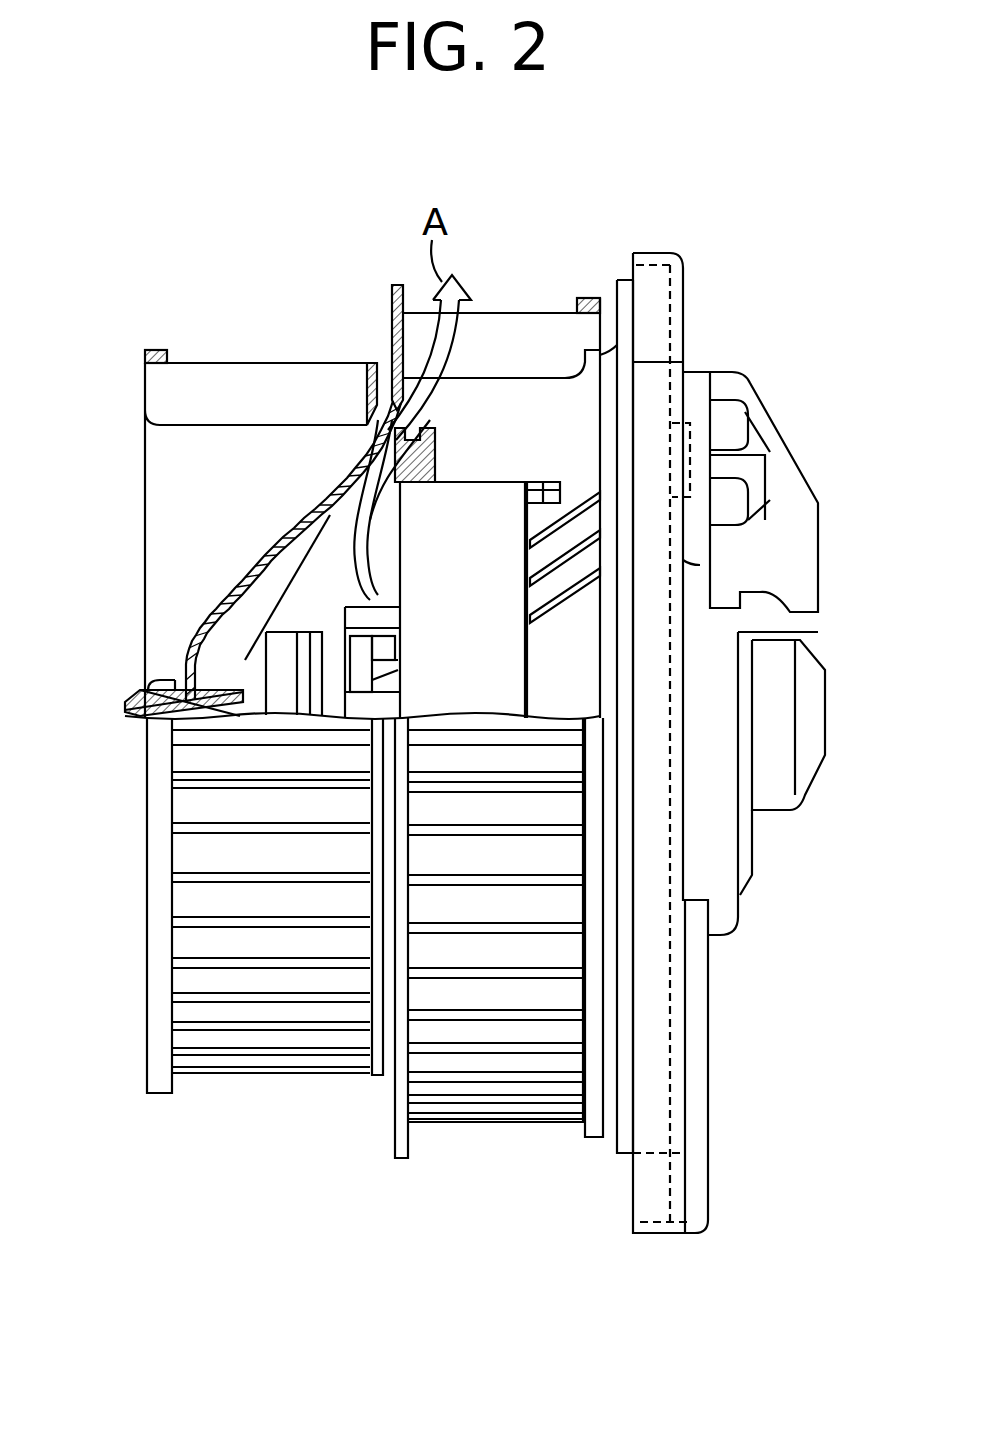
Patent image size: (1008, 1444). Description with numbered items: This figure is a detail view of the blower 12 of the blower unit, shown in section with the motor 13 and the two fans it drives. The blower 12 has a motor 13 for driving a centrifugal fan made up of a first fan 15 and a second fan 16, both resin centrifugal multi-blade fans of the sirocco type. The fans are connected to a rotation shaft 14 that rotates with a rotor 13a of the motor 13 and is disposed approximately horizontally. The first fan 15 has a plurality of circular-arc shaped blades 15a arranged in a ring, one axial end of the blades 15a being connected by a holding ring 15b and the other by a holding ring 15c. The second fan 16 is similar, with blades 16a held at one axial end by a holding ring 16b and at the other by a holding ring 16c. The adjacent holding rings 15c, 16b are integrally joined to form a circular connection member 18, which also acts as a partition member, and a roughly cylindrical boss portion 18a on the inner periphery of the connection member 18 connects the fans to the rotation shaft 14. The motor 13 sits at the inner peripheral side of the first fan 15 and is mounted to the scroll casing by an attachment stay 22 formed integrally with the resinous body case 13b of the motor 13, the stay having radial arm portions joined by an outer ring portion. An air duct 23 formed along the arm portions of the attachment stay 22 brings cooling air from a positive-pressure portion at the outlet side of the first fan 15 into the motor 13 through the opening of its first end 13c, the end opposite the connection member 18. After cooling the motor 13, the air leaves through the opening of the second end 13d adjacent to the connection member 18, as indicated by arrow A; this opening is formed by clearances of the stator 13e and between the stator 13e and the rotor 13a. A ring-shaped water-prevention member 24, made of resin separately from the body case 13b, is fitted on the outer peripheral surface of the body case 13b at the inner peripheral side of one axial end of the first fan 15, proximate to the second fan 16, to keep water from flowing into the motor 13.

The blower 12 is at (752, 955).
The motor 13 is at (798, 780).
The rotor 13a is at (204, 633).
The body case 13b is at (563, 508).
The first end 13c is at (755, 865).
The second end 13d is at (305, 530).
The stator 13e is at (315, 578).
The rotation shaft 14 is at (128, 706).
The first fan 15 is at (501, 1145).
The blades 15a is at (527, 340).
The holding ring 15b is at (596, 1140).
The holding ring 15c is at (402, 1162).
The second fan 16 is at (268, 1095).
The blades 16a is at (263, 380).
The holding ring 16b is at (378, 1078).
The holding ring 16c is at (162, 1098).
The connection member 18 is at (285, 625).
The boss portion 18a is at (152, 688).
The attachment stay 22 is at (650, 297).
The air duct 23 is at (810, 525).
The water-prevention member 24 is at (430, 420).